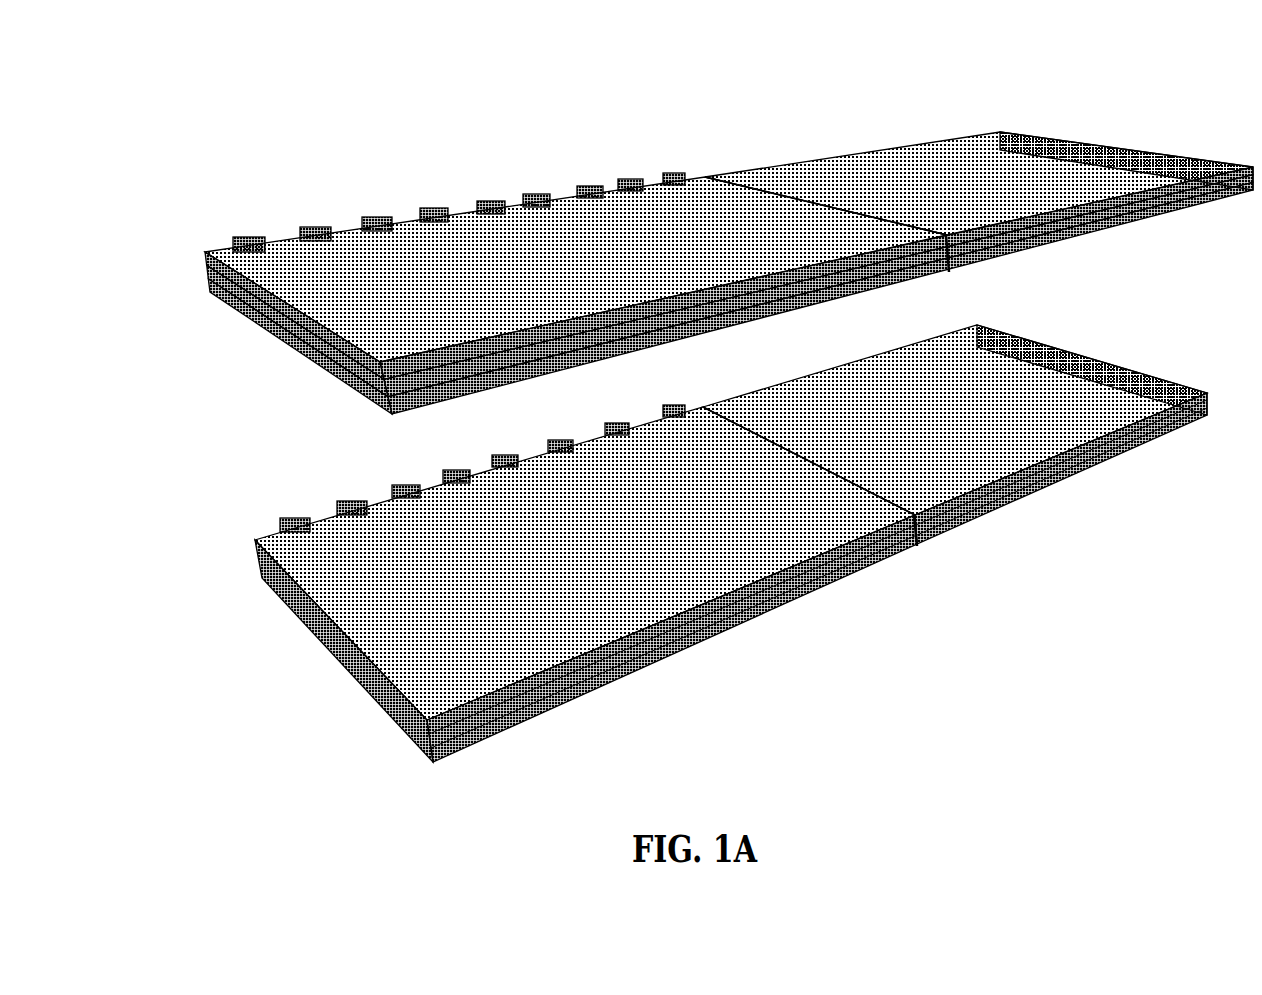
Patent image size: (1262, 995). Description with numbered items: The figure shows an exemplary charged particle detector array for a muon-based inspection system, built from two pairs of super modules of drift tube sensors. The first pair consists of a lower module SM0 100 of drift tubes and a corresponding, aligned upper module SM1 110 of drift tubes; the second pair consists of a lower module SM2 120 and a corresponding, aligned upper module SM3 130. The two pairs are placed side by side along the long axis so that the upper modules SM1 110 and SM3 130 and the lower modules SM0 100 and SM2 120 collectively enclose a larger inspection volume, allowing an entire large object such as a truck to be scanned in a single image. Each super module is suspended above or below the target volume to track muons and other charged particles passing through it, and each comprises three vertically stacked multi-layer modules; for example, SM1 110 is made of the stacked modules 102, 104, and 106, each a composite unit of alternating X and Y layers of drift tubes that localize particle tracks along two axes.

The lower module SM0 100 is at (713, 567).
The module 102 is at (432, 352).
The module 104 is at (432, 369).
The module 106 is at (432, 388).
The upper module SM1 110 is at (512, 243).
The lower module SM2 120 is at (1003, 440).
The upper module SM3 130 is at (993, 153).